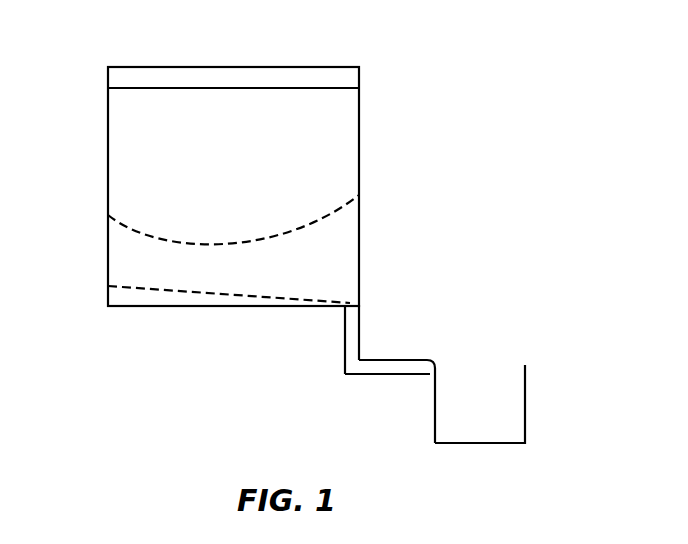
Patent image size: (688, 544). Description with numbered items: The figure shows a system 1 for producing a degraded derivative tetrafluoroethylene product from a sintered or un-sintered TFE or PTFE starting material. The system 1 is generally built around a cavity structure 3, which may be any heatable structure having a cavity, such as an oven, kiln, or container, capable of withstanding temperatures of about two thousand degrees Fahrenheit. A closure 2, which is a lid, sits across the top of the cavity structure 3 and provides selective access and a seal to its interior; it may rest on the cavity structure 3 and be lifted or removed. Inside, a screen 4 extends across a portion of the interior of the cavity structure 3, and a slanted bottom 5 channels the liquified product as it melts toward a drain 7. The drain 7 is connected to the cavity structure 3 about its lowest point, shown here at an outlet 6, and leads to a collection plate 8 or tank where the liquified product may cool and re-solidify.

The system 1 is at (388, 78).
The closure 2 is at (233, 55).
The cavity structure 3 is at (263, 186).
The screen 4 is at (207, 233).
The slanted bottom 5 is at (229, 321).
The tank outlet 6 is at (383, 327).
The drain 7 is at (374, 401).
The collection plate 8 is at (451, 423).